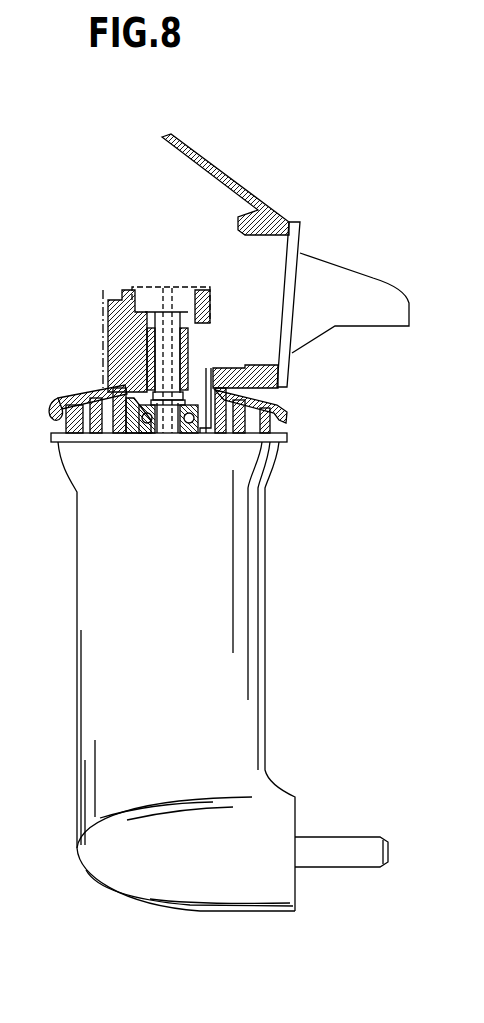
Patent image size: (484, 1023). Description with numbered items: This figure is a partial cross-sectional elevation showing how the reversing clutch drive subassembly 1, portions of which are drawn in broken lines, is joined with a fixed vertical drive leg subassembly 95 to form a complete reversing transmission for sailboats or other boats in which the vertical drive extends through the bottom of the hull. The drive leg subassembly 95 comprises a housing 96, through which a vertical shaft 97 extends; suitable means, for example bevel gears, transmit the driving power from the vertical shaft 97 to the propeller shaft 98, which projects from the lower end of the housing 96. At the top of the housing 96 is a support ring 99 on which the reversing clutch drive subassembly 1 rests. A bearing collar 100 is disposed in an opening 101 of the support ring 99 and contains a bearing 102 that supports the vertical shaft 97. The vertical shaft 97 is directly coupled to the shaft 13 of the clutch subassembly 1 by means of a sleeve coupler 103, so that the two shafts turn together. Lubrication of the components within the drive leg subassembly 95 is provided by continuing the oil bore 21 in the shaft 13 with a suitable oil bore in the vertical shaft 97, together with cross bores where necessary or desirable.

The subassembly 1 is at (223, 177).
The shaft 13 is at (175, 313).
The oil bore 21 is at (162, 313).
The sleeve coupler 103 is at (186, 345).
The vertical shaft 97 is at (173, 377).
The opening 101 is at (127, 395).
The support ring 99 is at (70, 400).
The bearing collar 100 is at (140, 427).
The bearing 102 is at (177, 423).
The fixed vertical drive leg subassembly 95 is at (83, 527).
The housing 96 is at (268, 590).
The propeller shaft 98 is at (342, 843).